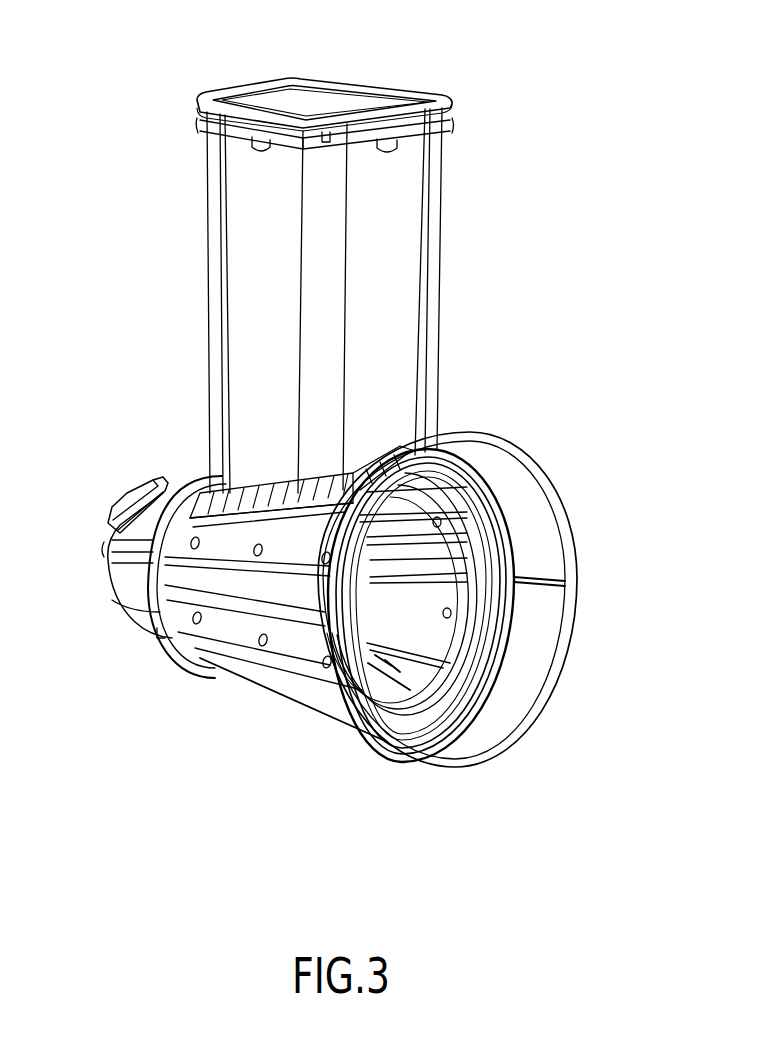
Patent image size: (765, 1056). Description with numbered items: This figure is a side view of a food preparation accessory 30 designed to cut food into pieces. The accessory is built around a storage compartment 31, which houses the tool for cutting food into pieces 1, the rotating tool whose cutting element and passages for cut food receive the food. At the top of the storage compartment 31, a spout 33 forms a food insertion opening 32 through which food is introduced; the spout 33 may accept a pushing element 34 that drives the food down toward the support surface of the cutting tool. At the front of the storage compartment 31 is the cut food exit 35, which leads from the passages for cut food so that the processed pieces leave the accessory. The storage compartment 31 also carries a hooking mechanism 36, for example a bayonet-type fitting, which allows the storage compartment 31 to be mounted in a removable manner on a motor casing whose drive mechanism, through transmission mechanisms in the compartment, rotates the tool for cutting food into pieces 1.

The tool for cutting food into pieces 1 is at (417, 620).
The food preparation accessory 30 is at (298, 710).
The storage compartment 31 is at (560, 493).
The food insertion opening 32 is at (220, 505).
The spout 33 is at (438, 278).
The pushing element 34 is at (357, 104).
The cut food exit 35 is at (530, 667).
The hooking mechanism 36 is at (125, 507).